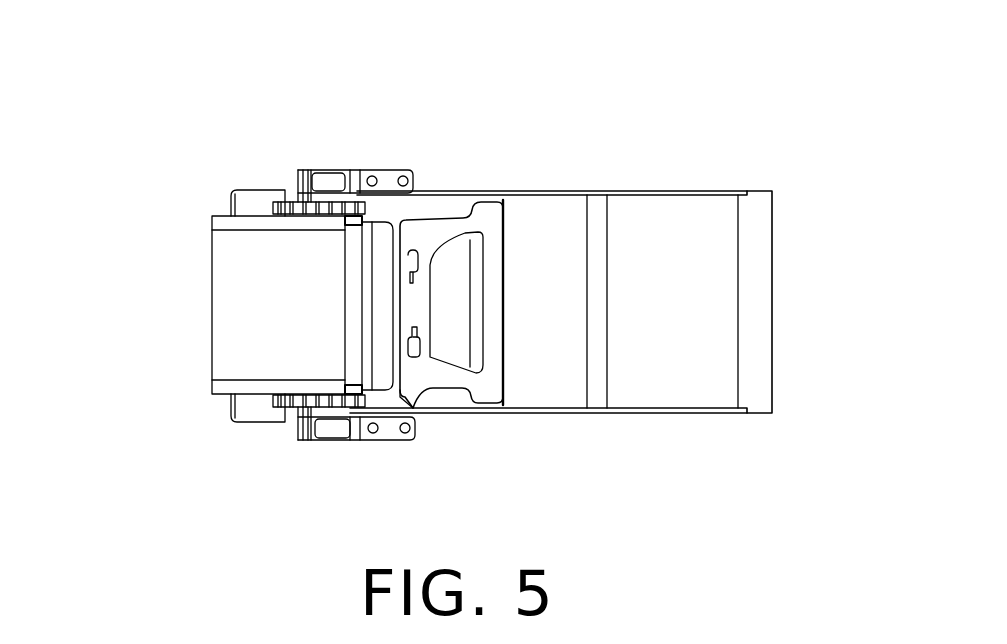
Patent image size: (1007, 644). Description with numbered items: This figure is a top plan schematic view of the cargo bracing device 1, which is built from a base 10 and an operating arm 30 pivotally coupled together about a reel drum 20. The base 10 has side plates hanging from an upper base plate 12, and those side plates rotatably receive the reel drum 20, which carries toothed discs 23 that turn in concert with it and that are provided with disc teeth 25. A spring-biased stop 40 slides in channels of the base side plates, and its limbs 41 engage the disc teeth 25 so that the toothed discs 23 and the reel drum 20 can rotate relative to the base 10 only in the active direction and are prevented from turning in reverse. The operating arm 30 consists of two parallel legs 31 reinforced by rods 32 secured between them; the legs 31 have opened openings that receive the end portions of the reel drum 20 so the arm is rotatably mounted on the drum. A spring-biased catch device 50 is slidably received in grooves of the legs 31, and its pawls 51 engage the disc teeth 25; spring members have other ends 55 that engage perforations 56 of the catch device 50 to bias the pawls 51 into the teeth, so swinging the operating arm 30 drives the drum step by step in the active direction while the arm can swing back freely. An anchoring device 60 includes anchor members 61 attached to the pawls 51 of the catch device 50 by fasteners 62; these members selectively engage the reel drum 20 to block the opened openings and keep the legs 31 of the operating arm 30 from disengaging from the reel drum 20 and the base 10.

The cargo bracing device 1 is at (562, 102).
The base 10 is at (198, 269).
The base plate 12 is at (233, 323).
The reel drum 20 is at (308, 442).
The toothed discs 23 is at (291, 200).
The disc teeth 25 is at (293, 412).
The operating arm 30 is at (687, 170).
The legs 31 is at (657, 413).
The rods 32 is at (600, 333).
The spring-biased stop 40 is at (233, 178).
The limbs 41 is at (243, 416).
The spring-biased catch device 50 is at (410, 222).
The pawls 51 is at (380, 398).
The other end of spring member 55 is at (417, 330).
The perforations 56 is at (417, 357).
The anchoring device 60 is at (332, 168).
The anchor members 61 is at (334, 428).
The fasteners 62 is at (402, 177).